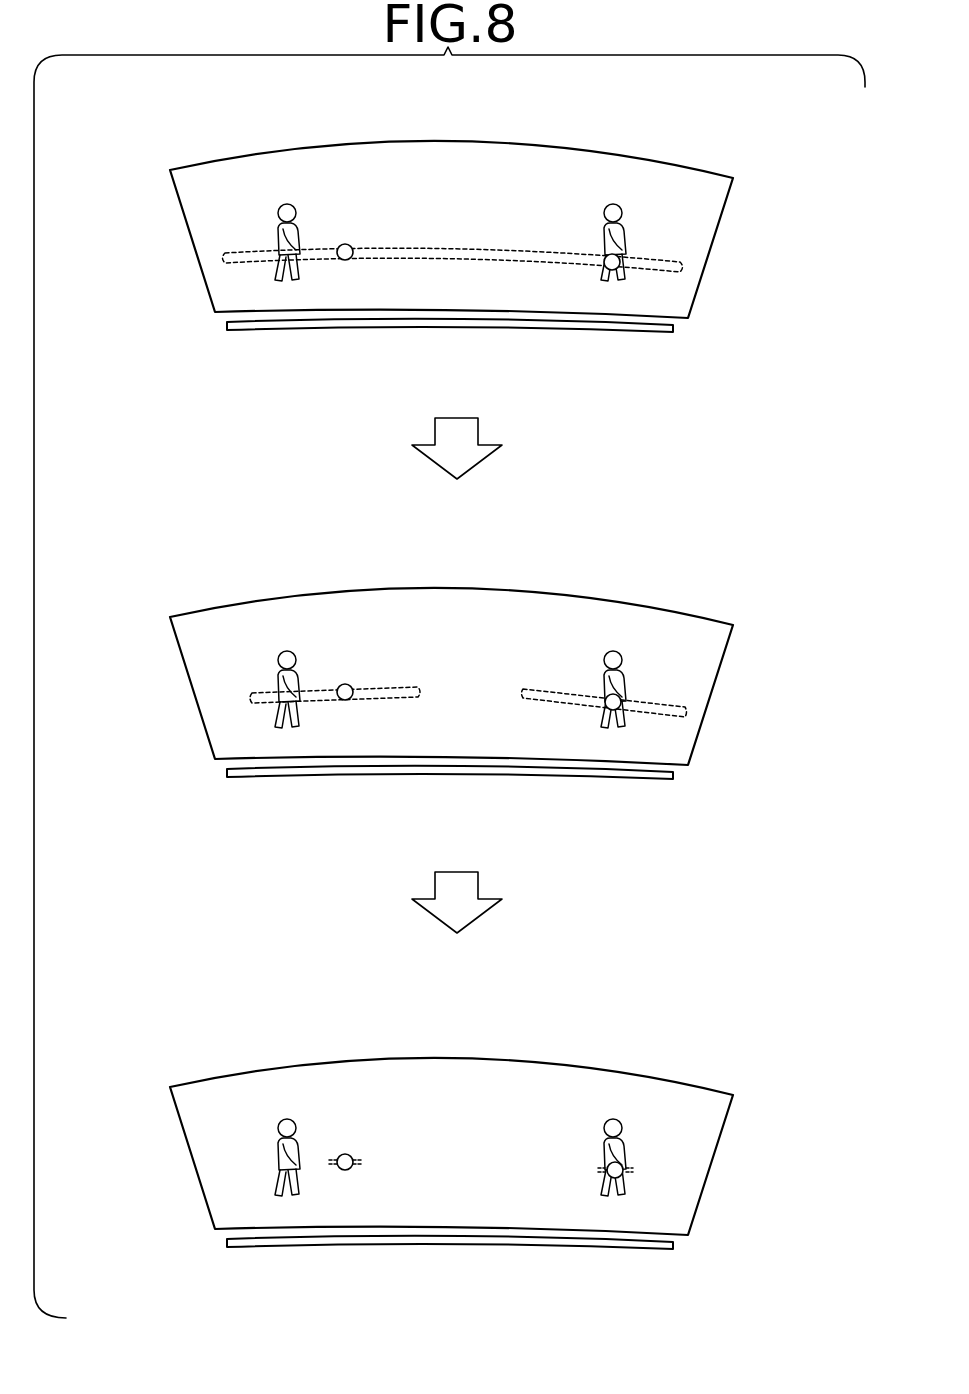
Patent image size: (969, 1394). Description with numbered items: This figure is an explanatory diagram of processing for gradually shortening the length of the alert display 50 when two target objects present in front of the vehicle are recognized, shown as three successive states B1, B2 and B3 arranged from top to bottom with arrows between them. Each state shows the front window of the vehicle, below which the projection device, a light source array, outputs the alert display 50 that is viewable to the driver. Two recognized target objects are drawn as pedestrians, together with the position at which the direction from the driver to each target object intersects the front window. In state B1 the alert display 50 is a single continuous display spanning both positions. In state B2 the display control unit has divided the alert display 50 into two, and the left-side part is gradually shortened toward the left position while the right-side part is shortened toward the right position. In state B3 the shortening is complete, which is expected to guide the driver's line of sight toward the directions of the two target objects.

The alert display 50 is at (437, 248).
The first display state B1 is at (726, 119).
The second display state B2 is at (726, 566).
The third display state B3 is at (726, 1041).